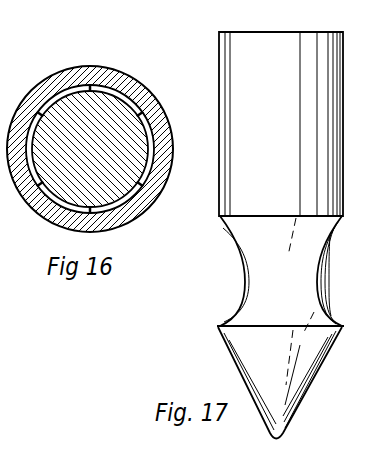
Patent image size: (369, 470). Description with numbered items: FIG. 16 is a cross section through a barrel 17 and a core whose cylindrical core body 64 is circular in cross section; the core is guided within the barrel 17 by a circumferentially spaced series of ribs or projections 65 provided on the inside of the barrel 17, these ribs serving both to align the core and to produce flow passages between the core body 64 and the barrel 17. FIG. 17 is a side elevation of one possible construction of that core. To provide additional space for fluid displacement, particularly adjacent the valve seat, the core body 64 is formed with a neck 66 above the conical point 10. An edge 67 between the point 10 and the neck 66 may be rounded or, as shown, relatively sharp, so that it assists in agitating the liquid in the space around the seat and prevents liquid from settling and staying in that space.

In FIG. 17, the conical point 10 is at (282, 403).
In FIG. 16, the barrel 17 is at (138, 92).
In FIG. 16, the cylindrical core body 64 is at (128, 158).
In FIG. 17, the cylindrical core body 64 is at (273, 183).
In FIG. 16, the ribs or projections 65 is at (39, 111).
In FIG. 17, the neck 66 is at (288, 291).
In FIG. 17, the edge 67 is at (218, 326).